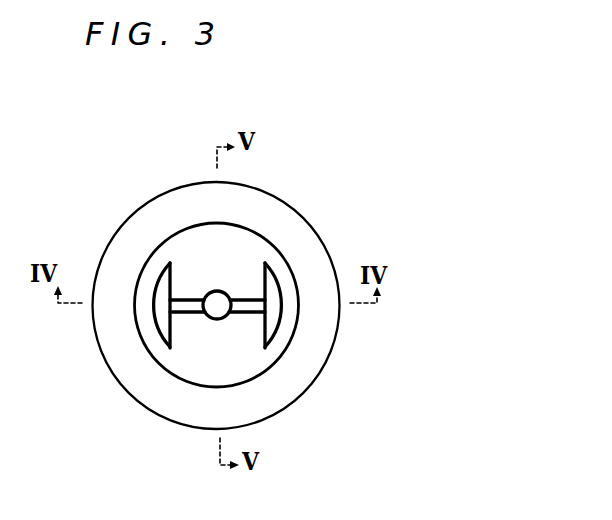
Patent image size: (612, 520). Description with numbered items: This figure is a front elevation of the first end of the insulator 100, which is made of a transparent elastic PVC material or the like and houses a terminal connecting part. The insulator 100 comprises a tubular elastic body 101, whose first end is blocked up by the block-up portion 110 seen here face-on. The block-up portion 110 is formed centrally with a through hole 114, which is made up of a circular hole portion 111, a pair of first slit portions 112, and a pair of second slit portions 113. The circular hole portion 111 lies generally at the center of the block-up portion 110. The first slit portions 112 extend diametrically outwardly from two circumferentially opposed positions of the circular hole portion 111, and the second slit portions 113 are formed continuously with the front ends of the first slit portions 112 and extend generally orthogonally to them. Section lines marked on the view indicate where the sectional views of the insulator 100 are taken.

The insulator 100 is at (497, 177).
The tubular elastic body 101 is at (147, 261).
The block-up portion 110 is at (257, 255).
The circular hole portion 111 is at (217, 315).
The first slit portions 112 is at (186, 299).
The second slit portions 113 is at (271, 324).
The through hole 114 is at (223, 276).